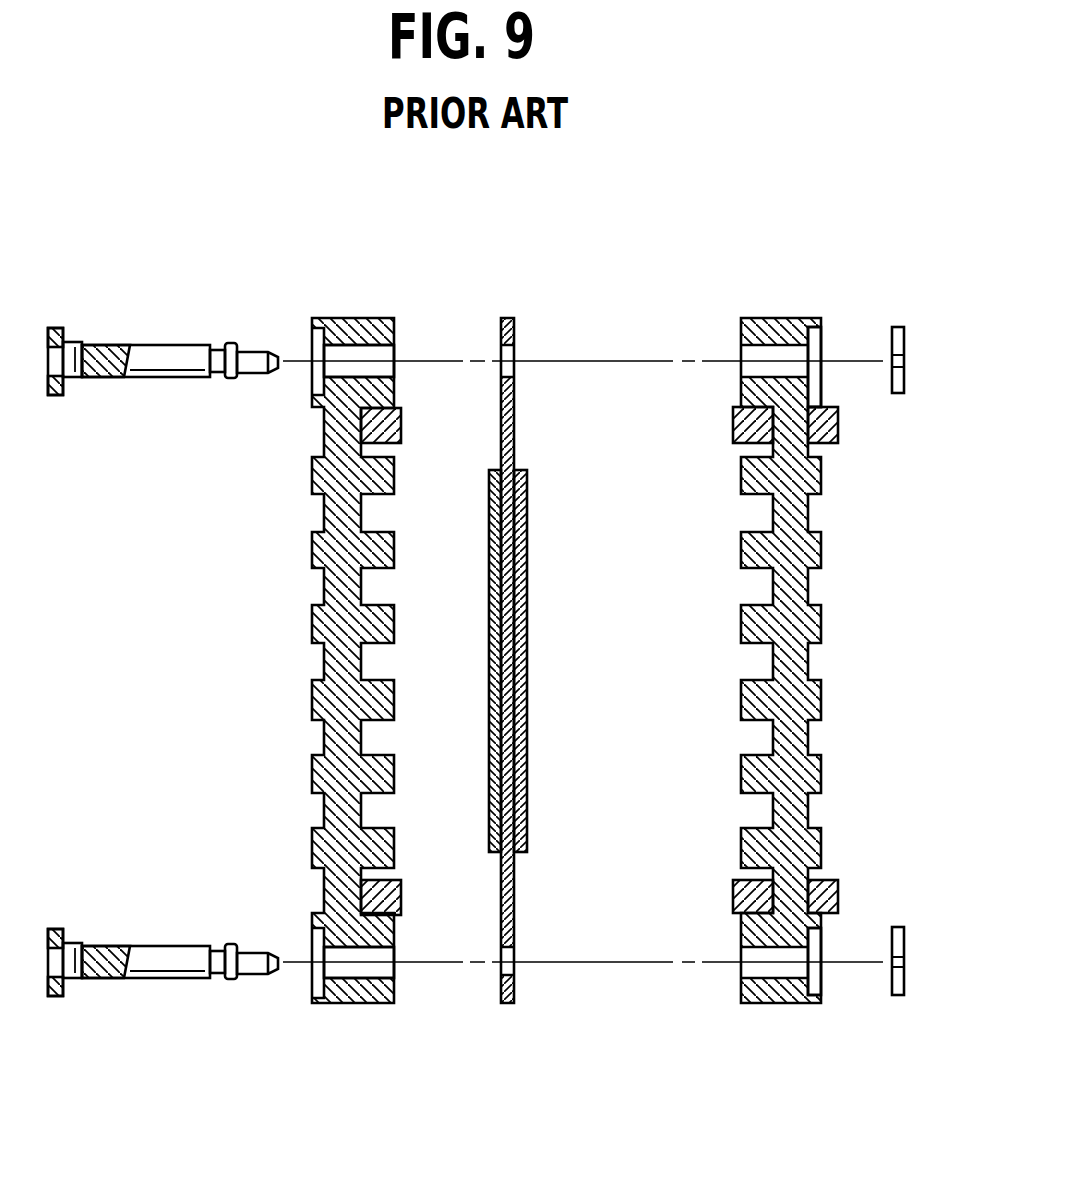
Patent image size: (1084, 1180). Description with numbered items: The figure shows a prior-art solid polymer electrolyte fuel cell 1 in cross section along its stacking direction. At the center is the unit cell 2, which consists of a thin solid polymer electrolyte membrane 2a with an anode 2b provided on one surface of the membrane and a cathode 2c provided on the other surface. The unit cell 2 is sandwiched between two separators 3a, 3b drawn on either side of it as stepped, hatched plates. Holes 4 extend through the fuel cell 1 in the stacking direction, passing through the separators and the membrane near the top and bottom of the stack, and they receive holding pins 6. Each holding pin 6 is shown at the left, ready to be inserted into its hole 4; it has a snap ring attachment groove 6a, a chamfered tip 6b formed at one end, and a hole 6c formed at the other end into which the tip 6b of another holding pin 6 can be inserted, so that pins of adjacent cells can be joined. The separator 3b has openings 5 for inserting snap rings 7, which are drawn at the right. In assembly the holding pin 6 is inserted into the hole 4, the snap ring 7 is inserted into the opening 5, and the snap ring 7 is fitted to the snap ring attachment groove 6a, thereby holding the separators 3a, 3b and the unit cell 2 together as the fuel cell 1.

The solid polymer electrolyte fuel cell 1 is at (791, 177).
The unit cell 2 is at (577, 660).
The solid polymer electrolyte membrane 2a is at (517, 623).
The anode 2b is at (520, 582).
The cathode 2c is at (551, 661).
The separator 3a is at (353, 330).
The separator 3b is at (778, 322).
The hole 4 is at (382, 350).
The opening 5 is at (813, 334).
The holding pin 6 is at (163, 316).
The snap ring attachment groove 6a is at (220, 343).
The chamfered tip 6b is at (240, 331).
The hole 6c is at (73, 348).
The snap ring 7 is at (897, 330).